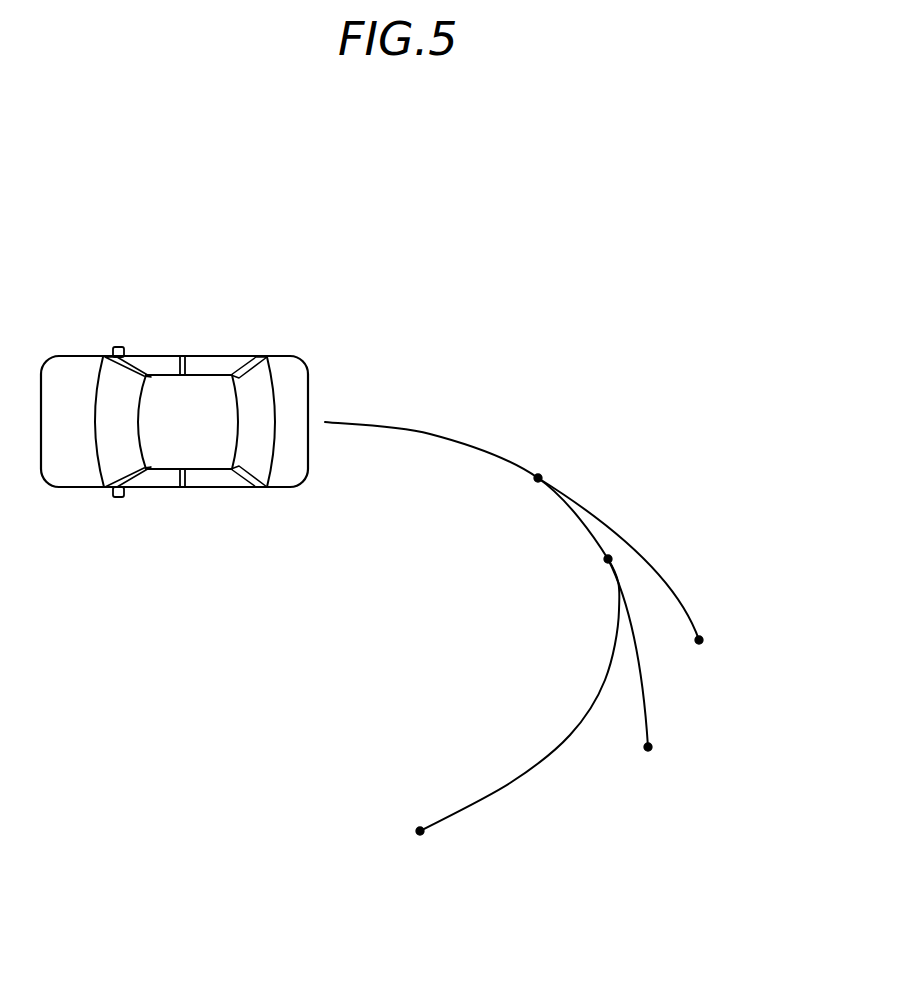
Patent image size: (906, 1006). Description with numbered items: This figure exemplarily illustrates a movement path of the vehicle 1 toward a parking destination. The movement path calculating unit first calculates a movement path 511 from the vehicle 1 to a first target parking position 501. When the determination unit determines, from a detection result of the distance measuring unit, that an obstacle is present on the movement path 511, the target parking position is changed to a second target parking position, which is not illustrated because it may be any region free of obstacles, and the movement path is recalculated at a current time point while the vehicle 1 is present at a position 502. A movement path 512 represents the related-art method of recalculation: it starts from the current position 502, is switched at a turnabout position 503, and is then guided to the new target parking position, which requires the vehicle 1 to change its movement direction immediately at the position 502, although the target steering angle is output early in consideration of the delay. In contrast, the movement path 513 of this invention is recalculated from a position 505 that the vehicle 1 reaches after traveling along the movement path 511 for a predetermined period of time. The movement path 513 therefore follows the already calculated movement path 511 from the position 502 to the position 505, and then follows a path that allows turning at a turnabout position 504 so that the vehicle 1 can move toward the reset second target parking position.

The vehicle 1 is at (218, 366).
The first target parking position 501 is at (415, 827).
The position 502 is at (539, 473).
The turnabout position 503 is at (703, 636).
The turnabout position 504 is at (653, 747).
The position 505 is at (603, 561).
The movement path 511 is at (543, 756).
The movement path 512 is at (645, 560).
The movement path 513 is at (648, 709).